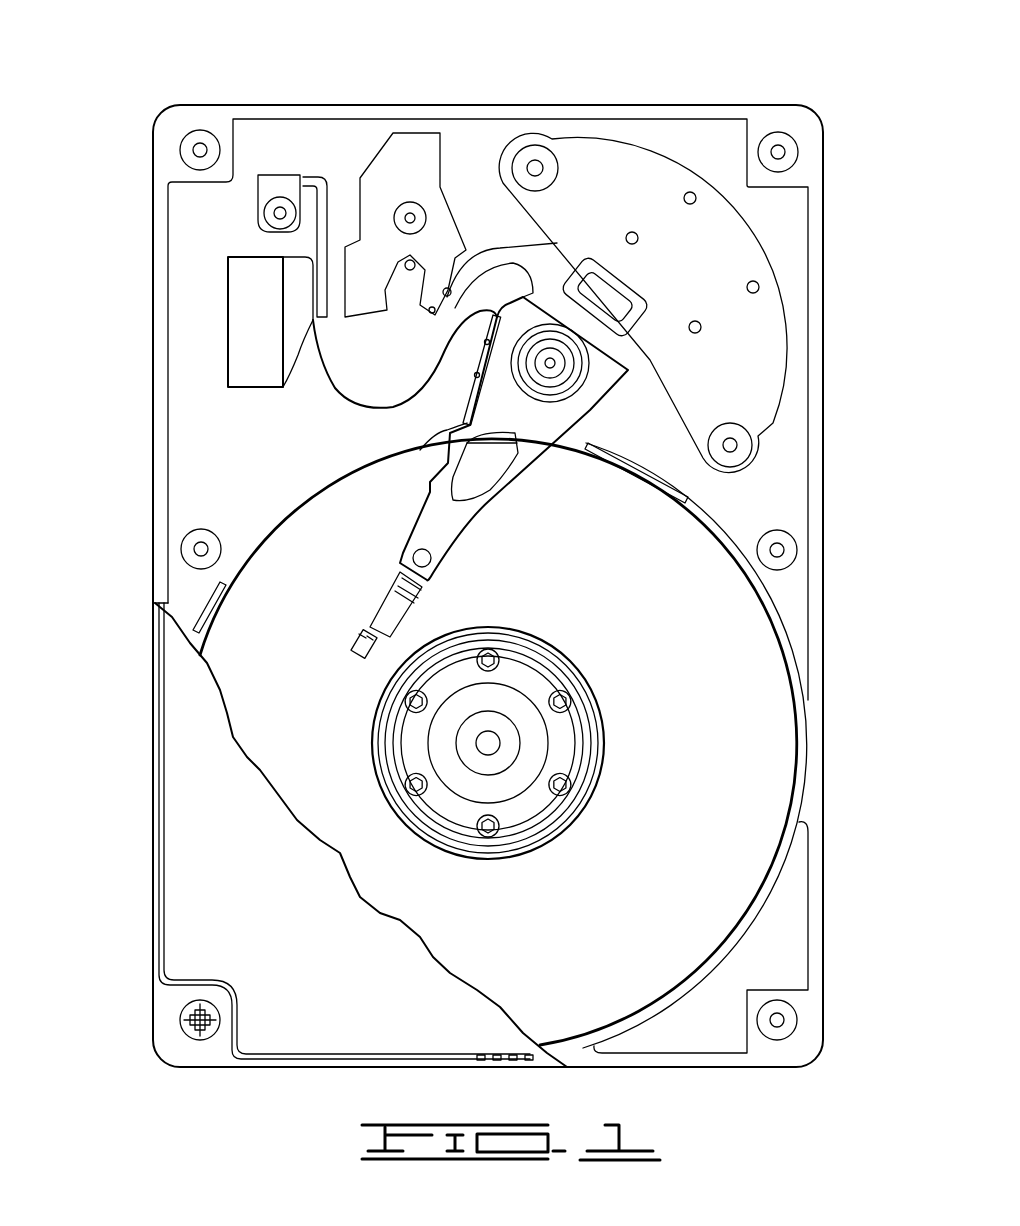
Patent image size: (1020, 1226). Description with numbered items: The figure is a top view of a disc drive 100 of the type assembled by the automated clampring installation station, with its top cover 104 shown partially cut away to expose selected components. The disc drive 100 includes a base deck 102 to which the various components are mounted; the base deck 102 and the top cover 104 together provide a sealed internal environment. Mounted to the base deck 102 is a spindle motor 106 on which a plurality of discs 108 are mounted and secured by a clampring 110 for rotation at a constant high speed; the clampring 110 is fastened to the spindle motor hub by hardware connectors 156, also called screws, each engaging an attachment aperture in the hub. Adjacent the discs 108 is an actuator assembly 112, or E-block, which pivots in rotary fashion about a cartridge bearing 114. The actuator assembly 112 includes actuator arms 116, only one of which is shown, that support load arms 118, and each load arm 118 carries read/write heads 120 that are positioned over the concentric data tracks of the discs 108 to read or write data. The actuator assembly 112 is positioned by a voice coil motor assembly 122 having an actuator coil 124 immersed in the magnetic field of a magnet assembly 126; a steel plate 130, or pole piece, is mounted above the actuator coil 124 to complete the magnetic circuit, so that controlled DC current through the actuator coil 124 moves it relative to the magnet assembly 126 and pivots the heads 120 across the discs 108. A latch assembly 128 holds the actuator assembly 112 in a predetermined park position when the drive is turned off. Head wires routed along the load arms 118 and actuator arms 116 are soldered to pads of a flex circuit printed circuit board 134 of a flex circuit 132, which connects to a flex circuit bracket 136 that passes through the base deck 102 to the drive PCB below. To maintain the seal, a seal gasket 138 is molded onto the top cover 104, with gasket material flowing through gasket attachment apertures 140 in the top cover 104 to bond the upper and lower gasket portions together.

The disc drive 100 is at (262, 82).
The base deck 102 is at (240, 455).
The top cover 104 is at (185, 880).
The spindle motor 106 is at (500, 773).
The discs 108 is at (724, 827).
The clampring 110 is at (380, 780).
The actuator assembly 112 is at (528, 434).
The cartridge bearing 114 is at (560, 378).
The actuator arms 116 is at (430, 535).
The load arms 118 is at (383, 611).
The read/write heads 120 is at (355, 641).
The voice coil motor assembly 122 is at (775, 228).
The actuator coil 124 is at (575, 275).
The magnet assembly 126 is at (565, 160).
The latch assembly 128 is at (415, 150).
The steel plate 130 is at (673, 172).
The flex circuit 132 is at (355, 412).
The flex circuit printed circuit board 134 is at (467, 400).
The flex circuit bracket 136 is at (232, 322).
The seal gasket 138 is at (160, 695).
The gasket attachment apertures 140 is at (525, 1058).
The hardware connectors 156 is at (490, 650).